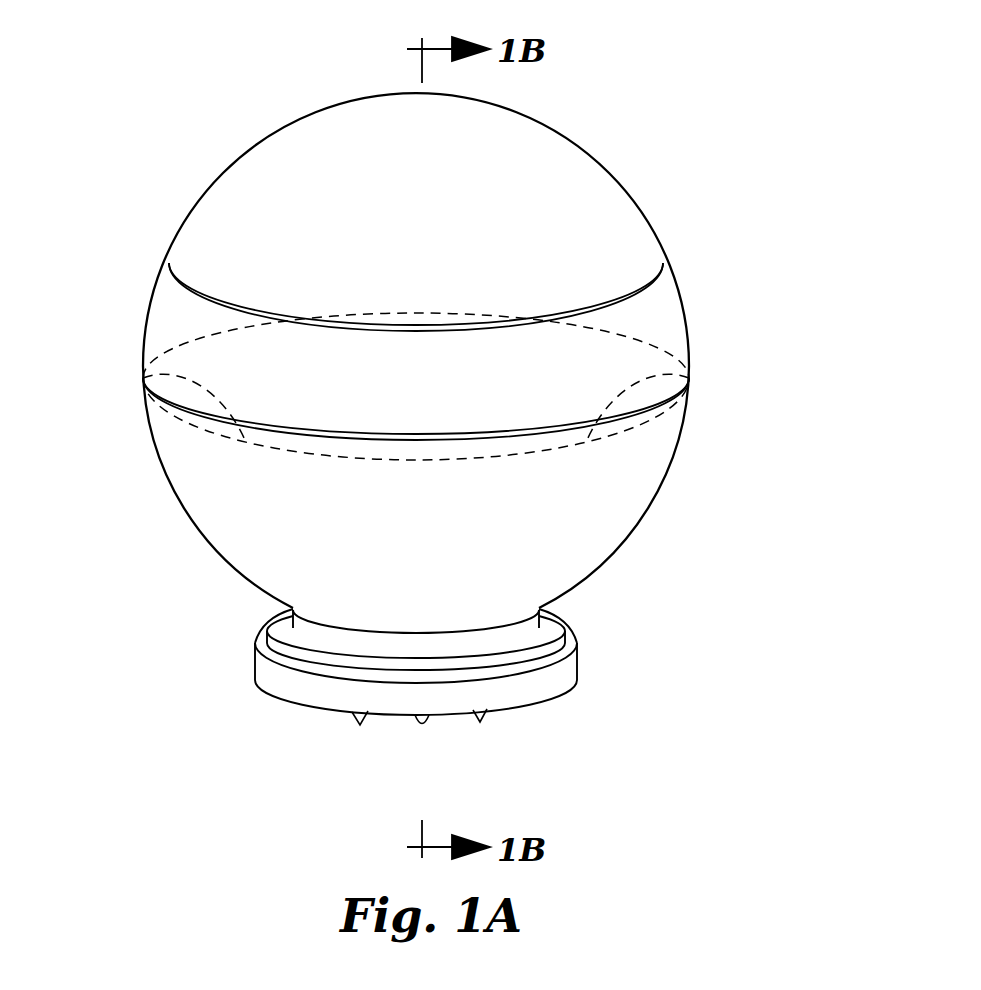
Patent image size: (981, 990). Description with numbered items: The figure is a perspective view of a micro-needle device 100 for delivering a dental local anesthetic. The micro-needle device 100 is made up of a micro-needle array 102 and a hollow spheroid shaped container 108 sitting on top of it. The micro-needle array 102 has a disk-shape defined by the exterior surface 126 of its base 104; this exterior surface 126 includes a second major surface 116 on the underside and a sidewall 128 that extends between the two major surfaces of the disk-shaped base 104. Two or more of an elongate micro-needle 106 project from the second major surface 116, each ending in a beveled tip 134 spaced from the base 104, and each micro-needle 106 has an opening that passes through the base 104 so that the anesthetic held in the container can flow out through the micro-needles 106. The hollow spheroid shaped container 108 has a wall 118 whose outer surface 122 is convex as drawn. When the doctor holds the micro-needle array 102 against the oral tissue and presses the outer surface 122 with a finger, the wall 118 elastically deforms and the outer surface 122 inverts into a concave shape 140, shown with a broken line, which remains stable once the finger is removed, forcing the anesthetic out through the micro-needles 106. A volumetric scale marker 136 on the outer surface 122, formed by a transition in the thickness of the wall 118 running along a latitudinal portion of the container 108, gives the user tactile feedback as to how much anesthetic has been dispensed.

The micro-needle device 100 is at (662, 104).
The micro-needle array 102 is at (252, 665).
The base 104 is at (563, 680).
The elongate micro-needle 106 is at (350, 733).
The hollow spheroid shaped container 108 is at (618, 180).
The second major surface 116 is at (517, 708).
The wall 118 is at (667, 480).
The outer surface 122 is at (173, 428).
The exterior surface 126 is at (280, 676).
The sidewall 128 is at (583, 652).
The tip 134 is at (422, 726).
The volumetric scale marker 136 is at (657, 283).
The concave shape 140 is at (390, 312).